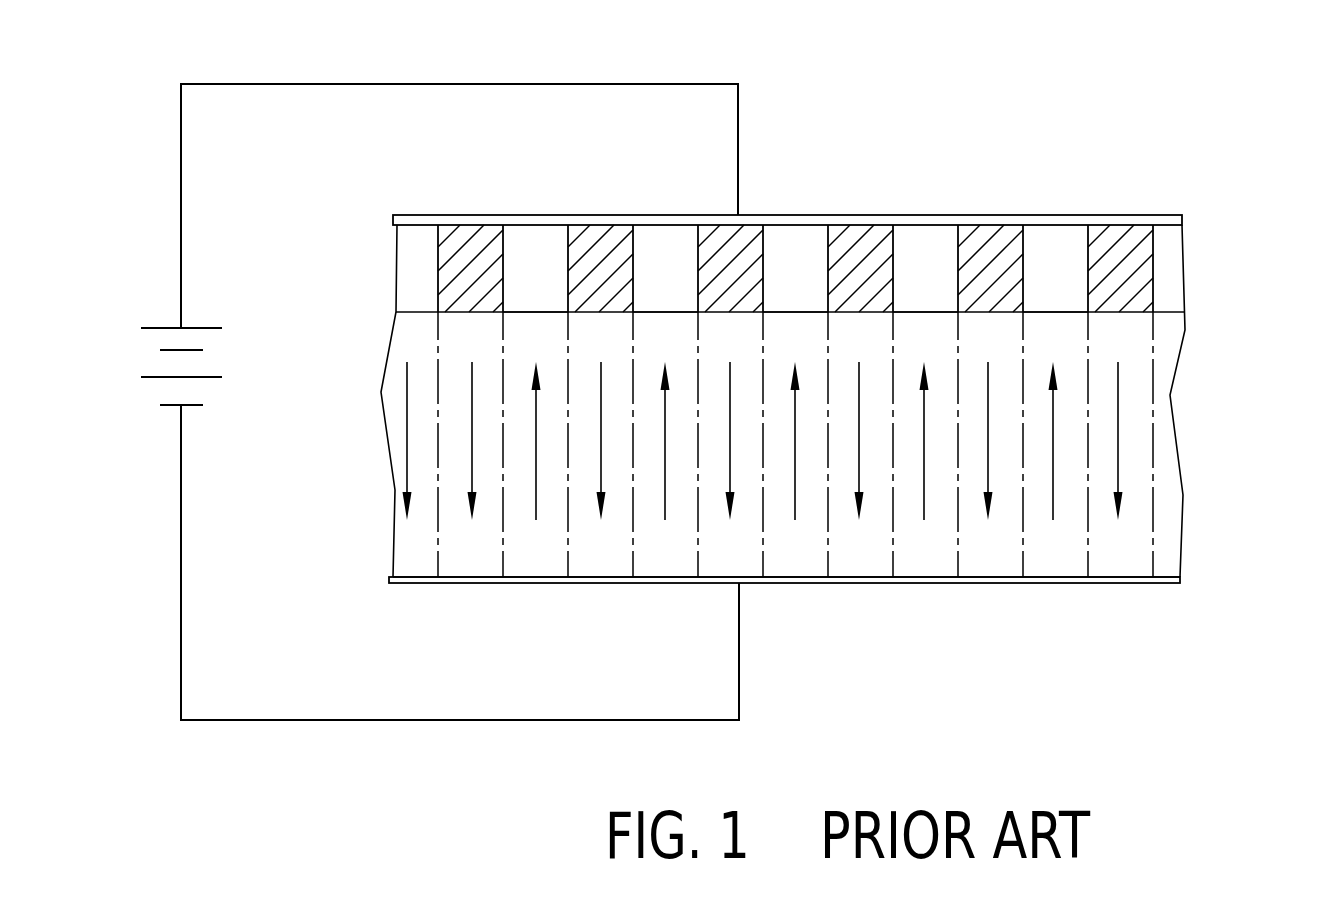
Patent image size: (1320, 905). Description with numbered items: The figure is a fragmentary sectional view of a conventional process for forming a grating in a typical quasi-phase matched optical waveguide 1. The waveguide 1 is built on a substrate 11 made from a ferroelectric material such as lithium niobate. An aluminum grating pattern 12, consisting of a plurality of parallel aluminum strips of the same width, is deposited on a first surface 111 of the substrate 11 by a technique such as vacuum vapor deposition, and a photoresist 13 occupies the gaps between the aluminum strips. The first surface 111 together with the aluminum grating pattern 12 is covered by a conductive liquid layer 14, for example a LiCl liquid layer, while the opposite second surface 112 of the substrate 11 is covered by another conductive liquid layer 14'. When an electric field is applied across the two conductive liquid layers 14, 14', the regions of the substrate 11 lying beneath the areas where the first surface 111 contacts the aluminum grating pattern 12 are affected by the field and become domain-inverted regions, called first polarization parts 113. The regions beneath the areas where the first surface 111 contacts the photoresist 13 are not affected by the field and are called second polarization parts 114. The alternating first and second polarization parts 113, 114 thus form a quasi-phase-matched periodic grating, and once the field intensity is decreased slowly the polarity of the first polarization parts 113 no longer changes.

The quasi-phase matched optical waveguide 1 is at (1149, 122).
The substrate 11 is at (400, 408).
The first surface 111 is at (1158, 313).
The second surface 112 is at (1165, 575).
The first polarization parts 113 is at (600, 563).
The second polarization parts 114 is at (538, 330).
The aluminum grating pattern 12 is at (465, 252).
The photoresist 13 is at (522, 275).
The conductive liquid layer 14 is at (787, 170).
The conductive liquid layer 14' is at (784, 649).